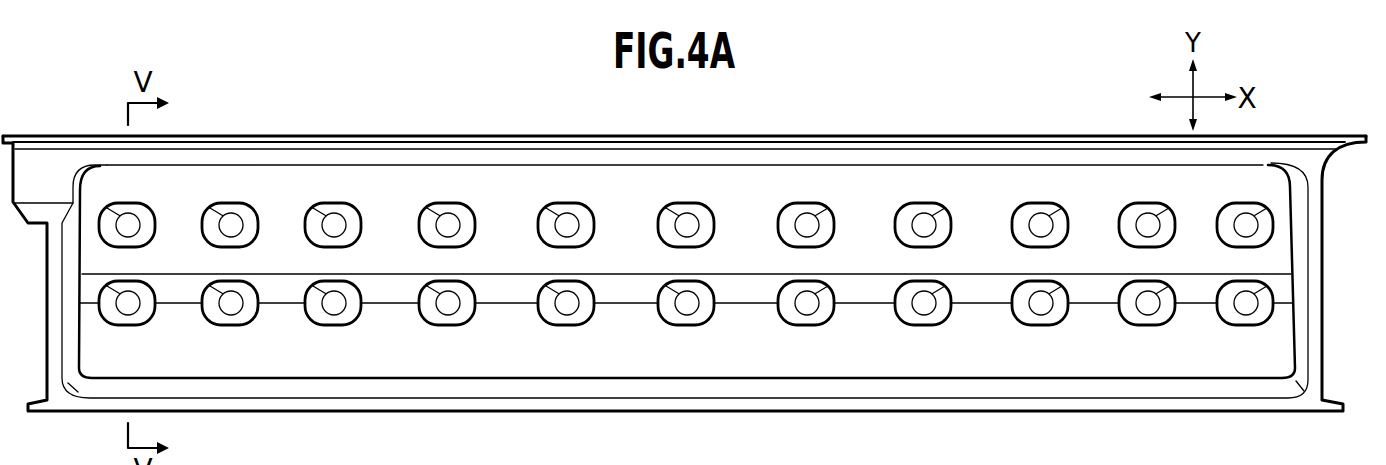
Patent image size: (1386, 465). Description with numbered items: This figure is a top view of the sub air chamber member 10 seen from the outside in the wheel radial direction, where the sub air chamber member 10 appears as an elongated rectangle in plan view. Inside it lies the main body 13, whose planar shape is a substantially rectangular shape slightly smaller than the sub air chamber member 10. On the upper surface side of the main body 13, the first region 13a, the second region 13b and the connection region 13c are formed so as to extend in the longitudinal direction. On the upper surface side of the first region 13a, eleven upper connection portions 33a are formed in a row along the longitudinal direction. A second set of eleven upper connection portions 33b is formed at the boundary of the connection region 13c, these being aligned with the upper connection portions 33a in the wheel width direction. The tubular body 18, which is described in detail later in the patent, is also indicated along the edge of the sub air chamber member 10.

The sub air chamber member 10 is at (1005, 119).
The tubular body 18 is at (45, 155).
The main body 13 is at (275, 185).
The first region 13a is at (393, 197).
The second region 13b is at (507, 347).
The connection region 13c is at (500, 285).
The upper connection portions 33a is at (1017, 207).
The upper connection portions 33b is at (820, 317).